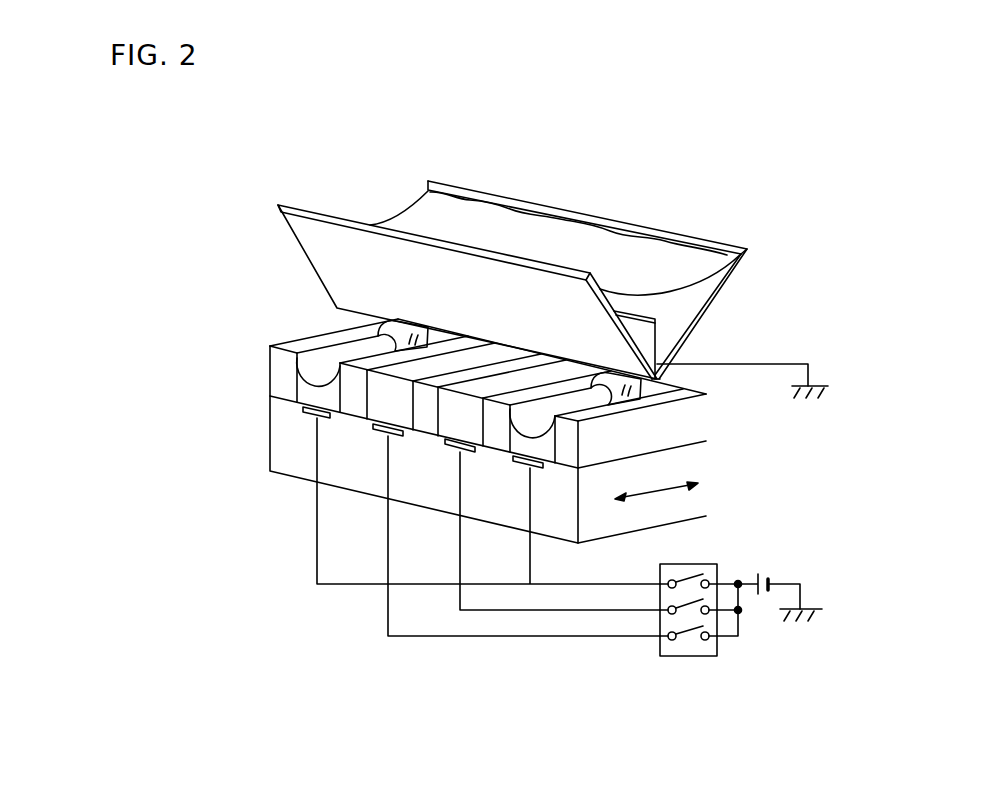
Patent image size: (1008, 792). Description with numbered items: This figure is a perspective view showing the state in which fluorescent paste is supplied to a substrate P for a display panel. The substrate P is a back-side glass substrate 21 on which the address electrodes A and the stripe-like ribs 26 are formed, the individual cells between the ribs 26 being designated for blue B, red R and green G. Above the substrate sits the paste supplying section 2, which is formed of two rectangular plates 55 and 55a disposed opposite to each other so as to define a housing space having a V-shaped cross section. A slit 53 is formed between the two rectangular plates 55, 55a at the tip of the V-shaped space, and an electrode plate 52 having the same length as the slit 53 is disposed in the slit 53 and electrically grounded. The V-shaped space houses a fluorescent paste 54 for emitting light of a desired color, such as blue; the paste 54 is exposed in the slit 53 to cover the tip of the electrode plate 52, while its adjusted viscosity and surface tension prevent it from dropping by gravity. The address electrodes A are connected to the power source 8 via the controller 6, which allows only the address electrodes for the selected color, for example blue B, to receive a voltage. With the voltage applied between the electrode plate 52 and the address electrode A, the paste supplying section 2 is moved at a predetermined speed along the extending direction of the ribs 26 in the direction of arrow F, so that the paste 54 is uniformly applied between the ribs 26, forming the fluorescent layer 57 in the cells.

The paste supplying section 2 is at (264, 135).
The rectangular plate 55 is at (471, 263).
The rectangular plate 55a is at (557, 203).
The fluorescent paste 54 is at (630, 257).
The electrode plate 52 is at (658, 330).
The slit 53 is at (680, 378).
The substrate for display panel P is at (181, 331).
The glass substrate 21 is at (268, 421).
The ribs 26 is at (268, 380).
The phosphor layer 57 is at (537, 445).
The address electrodes A is at (310, 412).
The blue B is at (438, 466).
The red R is at (404, 461).
The green G is at (476, 474).
The arrow F is at (660, 488).
The controller 6 is at (693, 562).
The power source 8 is at (760, 570).